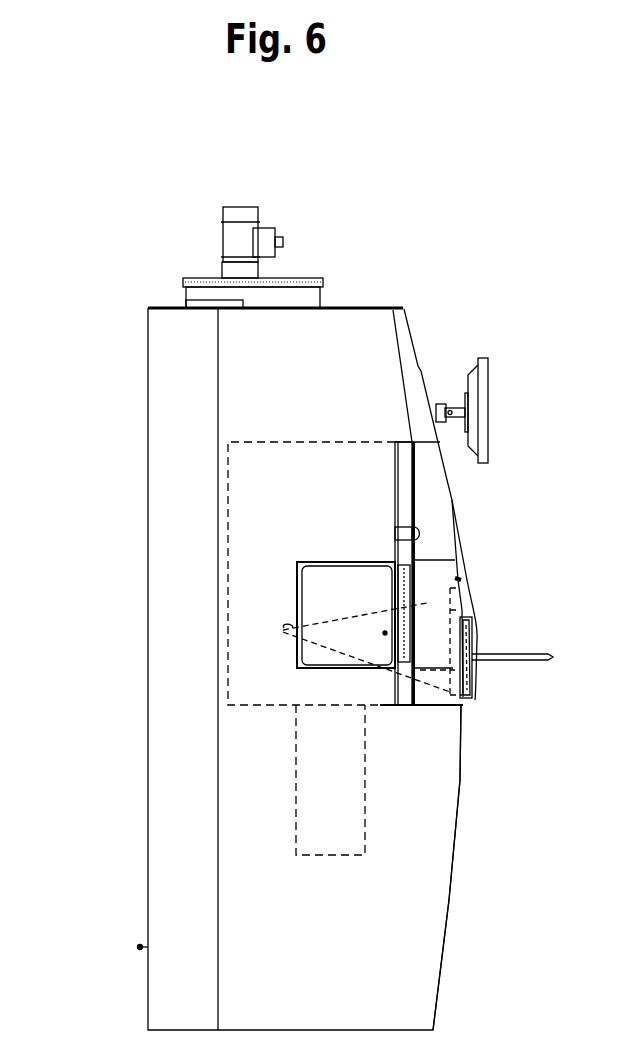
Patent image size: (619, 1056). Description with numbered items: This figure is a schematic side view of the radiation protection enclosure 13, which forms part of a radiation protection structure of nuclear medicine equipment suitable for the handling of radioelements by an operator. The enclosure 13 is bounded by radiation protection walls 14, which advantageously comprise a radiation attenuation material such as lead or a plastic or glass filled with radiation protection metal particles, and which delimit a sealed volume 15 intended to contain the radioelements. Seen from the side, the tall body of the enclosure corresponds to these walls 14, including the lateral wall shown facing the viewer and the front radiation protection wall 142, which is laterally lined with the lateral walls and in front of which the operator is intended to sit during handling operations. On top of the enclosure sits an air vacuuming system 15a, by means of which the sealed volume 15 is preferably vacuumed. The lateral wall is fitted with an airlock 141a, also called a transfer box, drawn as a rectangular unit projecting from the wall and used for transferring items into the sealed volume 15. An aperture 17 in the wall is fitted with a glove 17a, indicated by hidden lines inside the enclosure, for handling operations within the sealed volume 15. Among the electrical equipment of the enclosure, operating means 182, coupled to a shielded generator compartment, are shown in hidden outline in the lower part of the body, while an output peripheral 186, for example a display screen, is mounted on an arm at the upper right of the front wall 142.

The radiation protection enclosure 13 is at (364, 356).
The radiation protection walls 14 is at (420, 822).
The sealed volume 15 is at (267, 702).
The air vacuuming system 15a is at (241, 208).
The aperture 17 is at (453, 610).
The glove 17a is at (284, 630).
The airlock 141a is at (317, 585).
The front radiation protection wall 142 is at (452, 958).
The operating means 182 is at (320, 815).
The output peripheral 186 is at (483, 384).